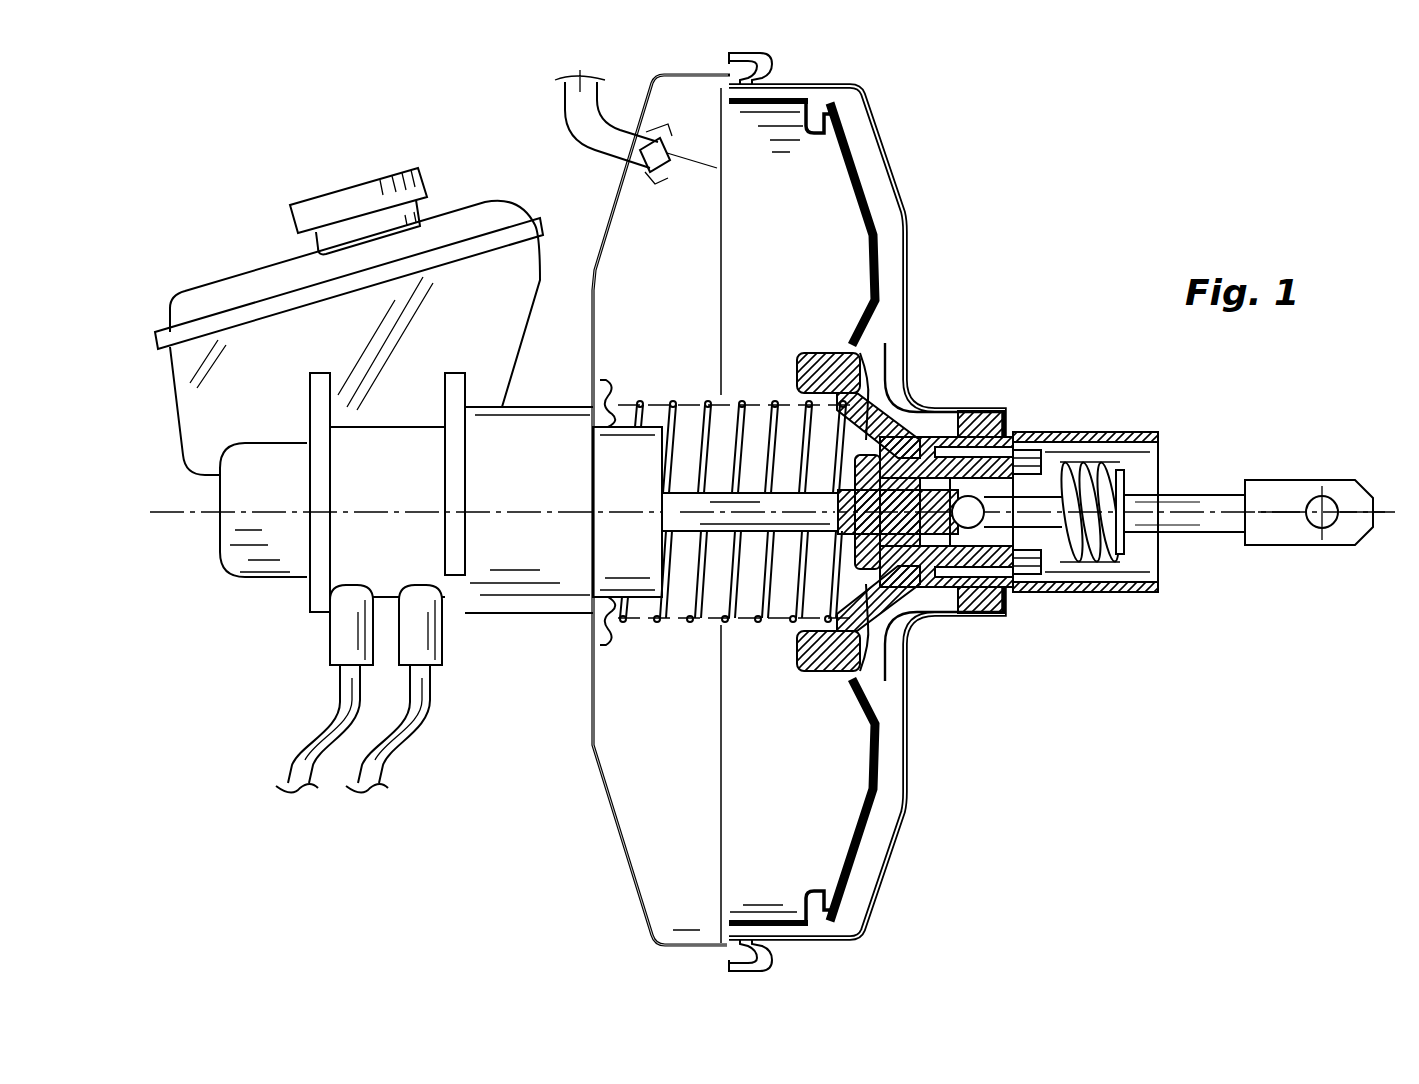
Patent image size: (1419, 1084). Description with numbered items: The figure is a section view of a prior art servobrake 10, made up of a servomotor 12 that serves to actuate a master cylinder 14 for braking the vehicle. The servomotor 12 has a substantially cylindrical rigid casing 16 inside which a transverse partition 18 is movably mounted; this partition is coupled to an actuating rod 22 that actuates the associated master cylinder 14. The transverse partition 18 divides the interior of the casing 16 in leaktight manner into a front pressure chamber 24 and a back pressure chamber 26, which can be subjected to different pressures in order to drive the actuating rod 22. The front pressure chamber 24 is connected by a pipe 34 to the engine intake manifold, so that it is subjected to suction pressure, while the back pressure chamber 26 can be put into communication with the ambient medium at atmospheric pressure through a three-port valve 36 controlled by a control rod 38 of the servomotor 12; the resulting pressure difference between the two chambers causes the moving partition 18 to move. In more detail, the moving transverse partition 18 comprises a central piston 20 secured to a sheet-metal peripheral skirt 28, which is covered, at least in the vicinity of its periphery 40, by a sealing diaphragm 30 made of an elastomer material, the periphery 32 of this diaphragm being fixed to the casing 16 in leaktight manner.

The servobrake 10 is at (1063, 248).
The servomotor 12 is at (917, 223).
The master cylinder 14 is at (517, 538).
The rigid casing 16 is at (902, 204).
The transverse partition 18 is at (857, 158).
The central piston 20 is at (892, 412).
The actuating rod 22 is at (755, 515).
The front pressure chamber 24 is at (663, 217).
The back pressure chamber 26 is at (880, 688).
The sheet-metal peripheral skirt 28 is at (826, 348).
The sealing diaphragm 30 is at (860, 352).
The periphery of the sealing diaphragm 32 is at (796, 103).
The pipe 34 is at (578, 124).
The three-port valve 36 is at (1025, 438).
The control rod 38 is at (1215, 518).
The periphery of the peripheral skirt 40 is at (822, 124).